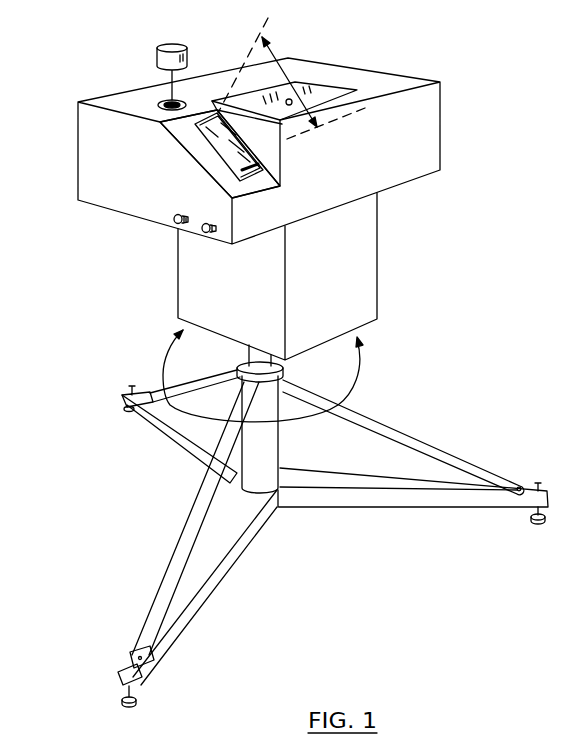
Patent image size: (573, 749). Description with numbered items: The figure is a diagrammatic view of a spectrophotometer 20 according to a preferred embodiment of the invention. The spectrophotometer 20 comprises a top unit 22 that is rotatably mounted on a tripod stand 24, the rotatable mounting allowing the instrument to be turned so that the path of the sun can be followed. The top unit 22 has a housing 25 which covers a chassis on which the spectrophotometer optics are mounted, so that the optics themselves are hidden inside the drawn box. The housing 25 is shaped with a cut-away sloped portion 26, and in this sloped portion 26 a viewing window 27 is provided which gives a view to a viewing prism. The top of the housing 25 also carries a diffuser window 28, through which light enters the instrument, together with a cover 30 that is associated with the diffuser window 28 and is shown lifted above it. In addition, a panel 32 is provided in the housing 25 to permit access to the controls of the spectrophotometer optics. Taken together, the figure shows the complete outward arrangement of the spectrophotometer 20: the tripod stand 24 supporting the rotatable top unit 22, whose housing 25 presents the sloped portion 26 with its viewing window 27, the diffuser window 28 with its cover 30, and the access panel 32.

The spectrophotometer 20 is at (95, 313).
The top unit 22 is at (378, 253).
The tripod stand 24 is at (433, 418).
The housing 25 is at (442, 130).
The cut-away sloped portion 26 is at (197, 148).
The viewing window 27 is at (252, 164).
The diffuser window 28 is at (158, 103).
The cover 30 is at (180, 44).
The panel 32 is at (333, 82).